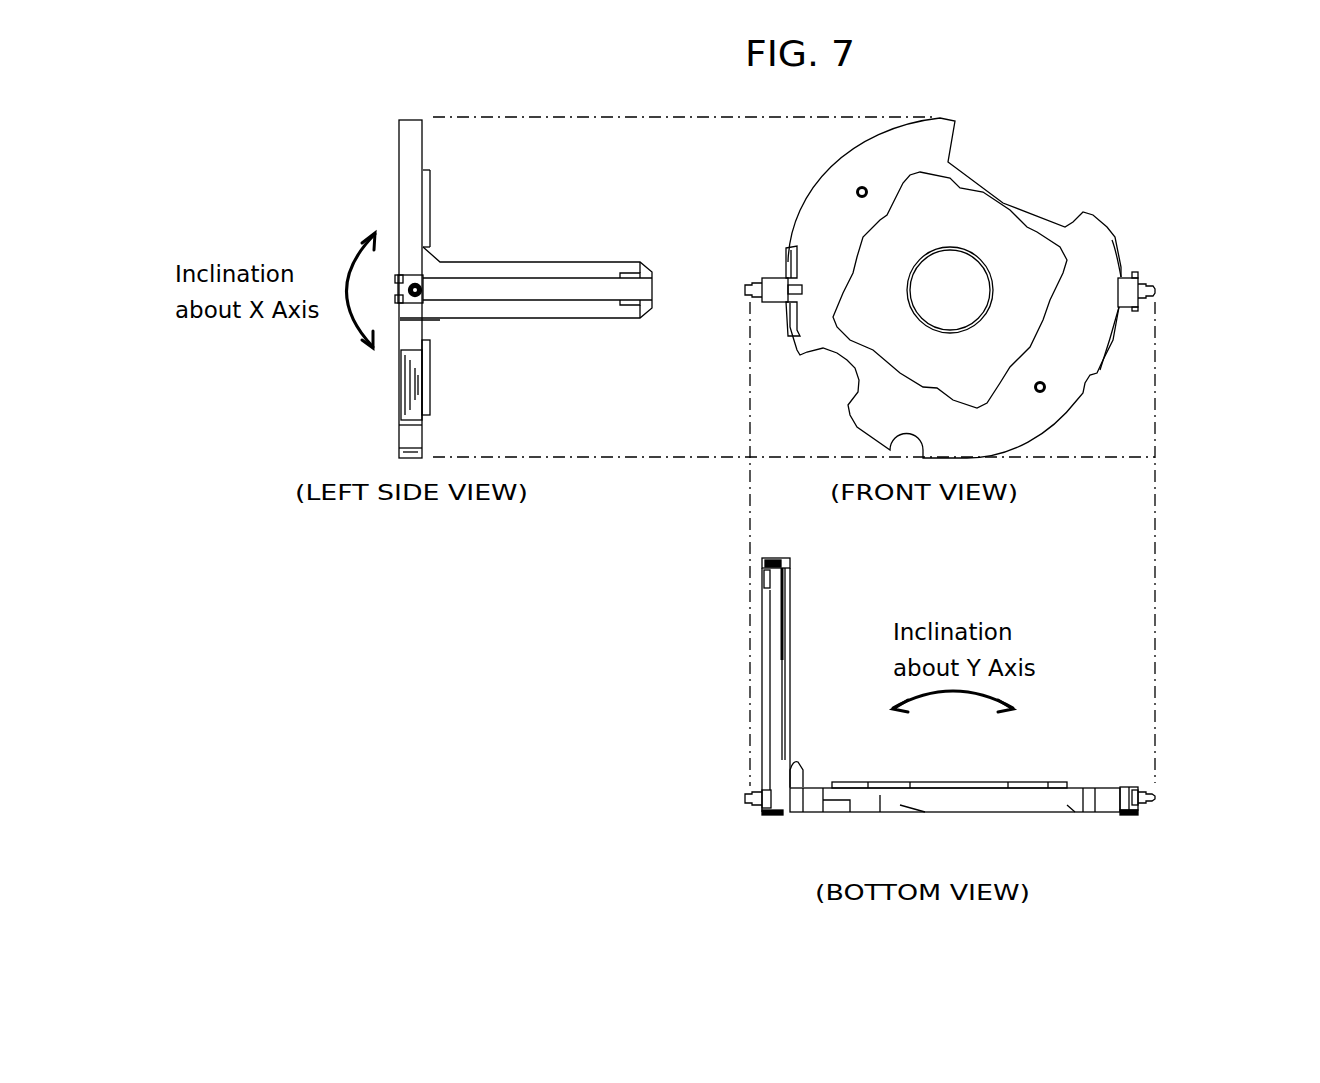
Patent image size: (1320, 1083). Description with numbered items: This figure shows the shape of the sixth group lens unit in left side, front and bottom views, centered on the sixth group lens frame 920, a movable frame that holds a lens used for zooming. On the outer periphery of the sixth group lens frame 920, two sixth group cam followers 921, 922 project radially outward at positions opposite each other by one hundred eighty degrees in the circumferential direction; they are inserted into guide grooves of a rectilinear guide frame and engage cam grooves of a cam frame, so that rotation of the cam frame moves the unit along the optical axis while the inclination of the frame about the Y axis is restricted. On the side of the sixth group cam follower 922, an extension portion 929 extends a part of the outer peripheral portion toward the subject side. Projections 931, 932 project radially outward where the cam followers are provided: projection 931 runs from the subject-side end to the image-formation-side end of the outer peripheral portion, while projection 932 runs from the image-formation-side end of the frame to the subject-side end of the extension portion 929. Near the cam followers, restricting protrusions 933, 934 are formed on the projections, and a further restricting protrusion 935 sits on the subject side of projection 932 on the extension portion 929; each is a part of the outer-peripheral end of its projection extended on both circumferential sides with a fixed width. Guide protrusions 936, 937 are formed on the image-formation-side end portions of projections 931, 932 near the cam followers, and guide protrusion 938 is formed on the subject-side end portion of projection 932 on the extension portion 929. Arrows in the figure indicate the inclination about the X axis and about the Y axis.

The sixth group lens frame 920 is at (932, 135).
The sixth group cam follower 921 is at (1155, 291).
The sixth group cam follower 922 is at (420, 295).
The extension portion 929 is at (532, 268).
The projection 931 is at (1122, 307).
The projection 932 is at (530, 292).
The restricting protrusion 933 is at (1138, 273).
The restricting protrusion 934 is at (432, 268).
The restricting protrusion 935 is at (628, 308).
The guide protrusion 936 is at (1126, 278).
The guide protrusion 937 is at (398, 273).
The guide protrusion 938 is at (640, 262).